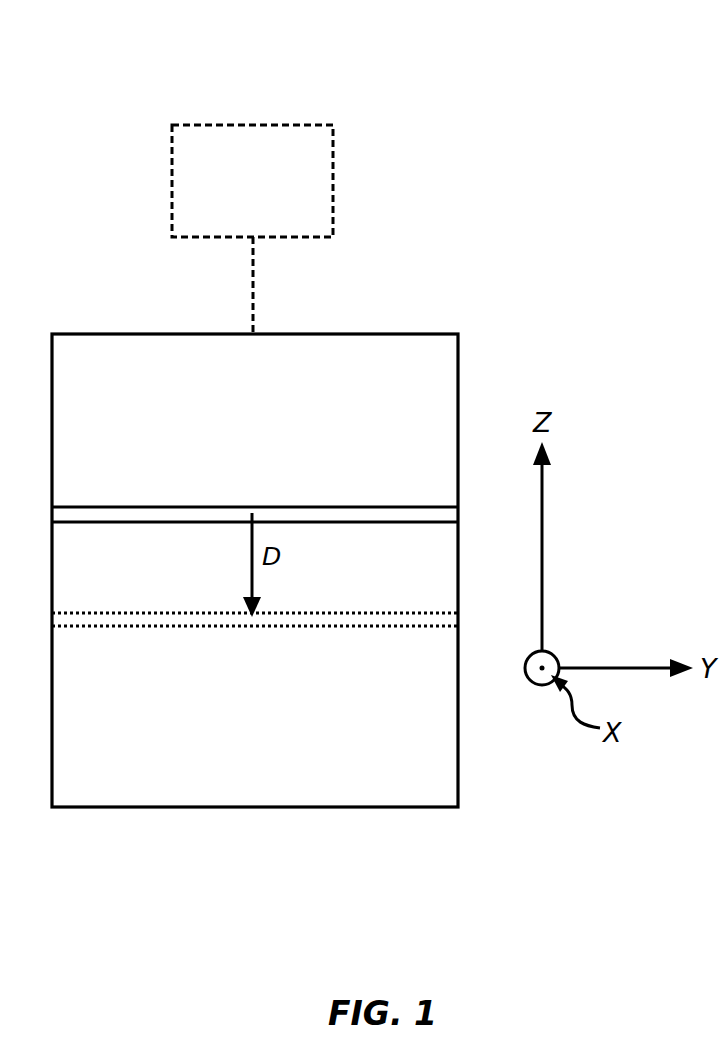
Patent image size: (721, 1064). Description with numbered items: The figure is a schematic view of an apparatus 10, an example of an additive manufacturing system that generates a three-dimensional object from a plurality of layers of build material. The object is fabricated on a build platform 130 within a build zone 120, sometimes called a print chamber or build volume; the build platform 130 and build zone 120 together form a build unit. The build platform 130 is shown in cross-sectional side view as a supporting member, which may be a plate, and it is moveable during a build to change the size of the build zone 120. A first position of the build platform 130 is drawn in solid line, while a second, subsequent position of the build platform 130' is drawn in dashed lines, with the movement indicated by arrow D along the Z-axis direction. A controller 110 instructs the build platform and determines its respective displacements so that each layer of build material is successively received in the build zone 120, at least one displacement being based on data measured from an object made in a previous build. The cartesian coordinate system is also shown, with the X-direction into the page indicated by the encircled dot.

The apparatus 10 is at (573, 118).
The controller 110 is at (172, 178).
The build zone 120 is at (280, 437).
The build platform 130 is at (255, 549).
The build platform in second position 130' is at (255, 653).